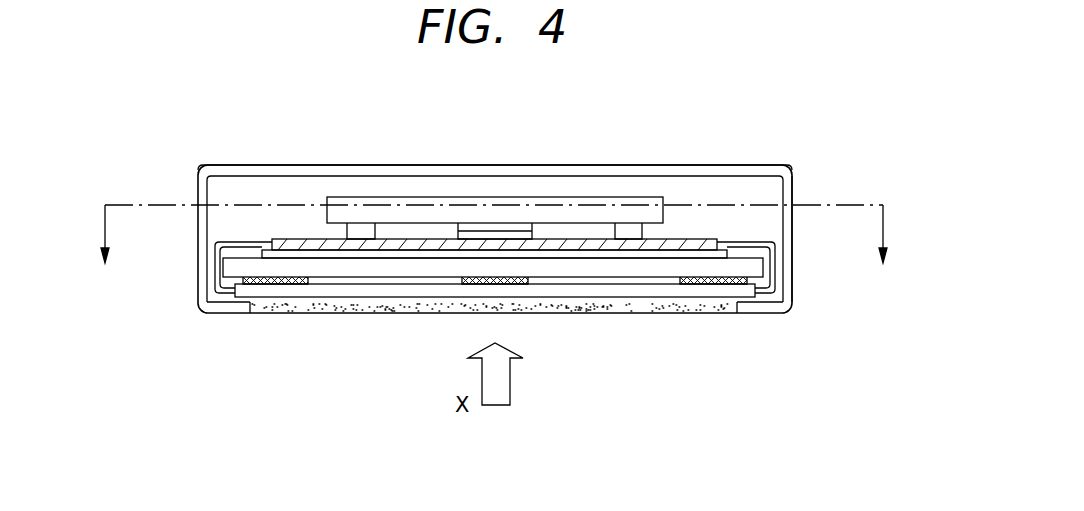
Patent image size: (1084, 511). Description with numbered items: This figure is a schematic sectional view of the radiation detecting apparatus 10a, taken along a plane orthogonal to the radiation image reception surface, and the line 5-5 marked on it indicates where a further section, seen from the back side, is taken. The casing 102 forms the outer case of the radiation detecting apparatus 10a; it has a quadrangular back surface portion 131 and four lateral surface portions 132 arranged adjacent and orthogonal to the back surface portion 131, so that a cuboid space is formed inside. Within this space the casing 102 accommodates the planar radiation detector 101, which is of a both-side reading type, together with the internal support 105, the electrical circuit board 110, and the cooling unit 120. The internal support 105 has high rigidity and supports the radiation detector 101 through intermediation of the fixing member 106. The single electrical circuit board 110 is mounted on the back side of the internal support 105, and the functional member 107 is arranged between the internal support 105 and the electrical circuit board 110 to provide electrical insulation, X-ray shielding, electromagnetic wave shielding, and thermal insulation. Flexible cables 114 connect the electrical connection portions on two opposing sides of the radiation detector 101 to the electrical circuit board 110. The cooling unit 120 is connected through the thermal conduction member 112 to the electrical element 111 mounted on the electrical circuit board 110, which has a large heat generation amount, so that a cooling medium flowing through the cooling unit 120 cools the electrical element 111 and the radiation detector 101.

The radiation detecting apparatus 10a is at (217, 325).
The radiation detector 101 is at (400, 297).
The casing 102 is at (197, 303).
The internal support 105 is at (235, 267).
The fixing member 106 is at (292, 279).
The functional member 107 is at (298, 252).
The electrical circuit board 110 is at (680, 241).
The electrical element 111 is at (458, 235).
The thermal conduction member 112 is at (470, 224).
The flexible cable 114 is at (763, 293).
The cooling unit 120 is at (570, 200).
The back surface portion 131 is at (755, 165).
The lateral surface portion 132 is at (793, 237).
The section line 5 is at (494, 254).